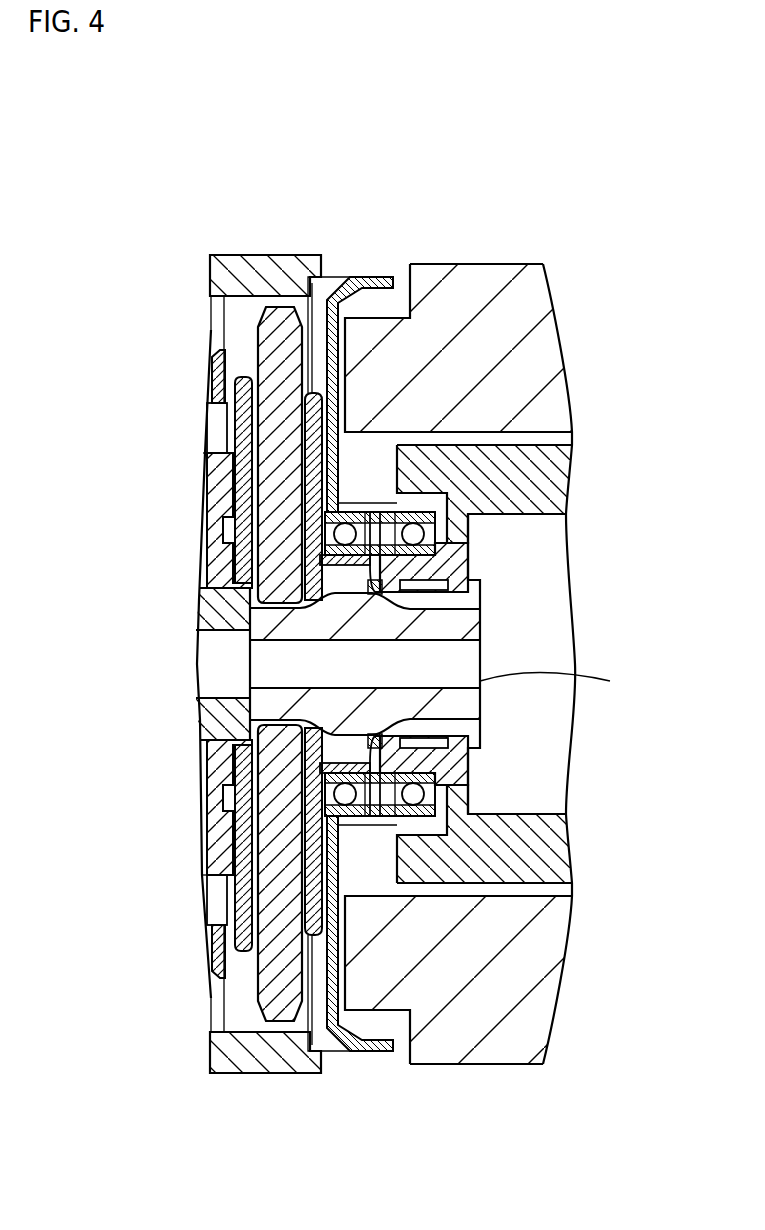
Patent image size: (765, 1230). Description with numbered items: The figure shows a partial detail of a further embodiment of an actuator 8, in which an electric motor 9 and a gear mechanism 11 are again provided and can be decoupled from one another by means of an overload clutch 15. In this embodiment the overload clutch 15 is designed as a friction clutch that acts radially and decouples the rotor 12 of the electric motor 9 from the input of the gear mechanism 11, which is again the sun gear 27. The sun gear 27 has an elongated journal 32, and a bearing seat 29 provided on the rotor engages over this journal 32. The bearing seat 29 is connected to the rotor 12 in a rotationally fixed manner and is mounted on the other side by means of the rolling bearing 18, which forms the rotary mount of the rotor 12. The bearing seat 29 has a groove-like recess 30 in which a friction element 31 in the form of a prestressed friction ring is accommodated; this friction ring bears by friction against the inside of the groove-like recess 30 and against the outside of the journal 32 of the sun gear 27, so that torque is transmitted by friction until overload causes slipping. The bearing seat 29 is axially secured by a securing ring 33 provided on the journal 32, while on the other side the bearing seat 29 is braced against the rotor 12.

The actuator 8 is at (551, 216).
The electric motor 9 is at (611, 330).
The gear mechanism 11 is at (248, 205).
The rotor 12 is at (547, 480).
The overload clutch 15 is at (452, 857).
The rolling bearing 18 is at (468, 525).
The sun gear 27 is at (280, 347).
The bearing seat 29 is at (440, 565).
The groove-like recess 30 is at (465, 760).
The friction element 31 is at (437, 737).
The journal 32 is at (430, 695).
The securing ring 33 is at (393, 594).